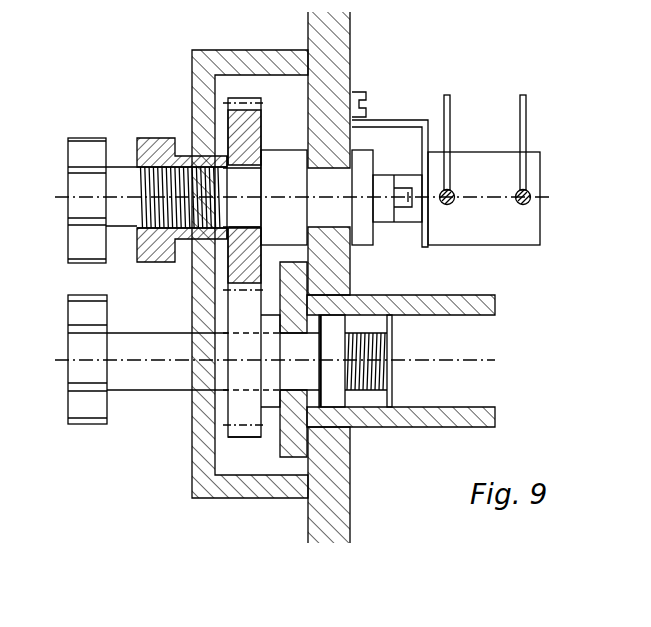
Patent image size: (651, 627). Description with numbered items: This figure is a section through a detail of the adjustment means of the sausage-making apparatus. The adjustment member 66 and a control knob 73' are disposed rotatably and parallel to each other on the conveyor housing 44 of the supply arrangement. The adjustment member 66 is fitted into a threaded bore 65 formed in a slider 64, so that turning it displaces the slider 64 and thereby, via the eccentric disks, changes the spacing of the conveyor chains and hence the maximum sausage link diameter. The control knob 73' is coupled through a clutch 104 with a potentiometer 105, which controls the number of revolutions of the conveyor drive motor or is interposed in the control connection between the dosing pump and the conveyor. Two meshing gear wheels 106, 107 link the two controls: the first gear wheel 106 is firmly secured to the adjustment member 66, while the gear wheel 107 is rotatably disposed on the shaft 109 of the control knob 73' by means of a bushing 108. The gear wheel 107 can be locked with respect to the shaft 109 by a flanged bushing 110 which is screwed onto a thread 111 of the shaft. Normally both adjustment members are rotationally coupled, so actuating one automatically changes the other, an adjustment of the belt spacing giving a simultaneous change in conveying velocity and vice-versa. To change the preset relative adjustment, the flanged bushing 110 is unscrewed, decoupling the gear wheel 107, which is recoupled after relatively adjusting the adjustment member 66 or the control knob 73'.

The conveyor housing 44 is at (313, 538).
The control knob 73' is at (75, 164).
The flanged bushing 110 is at (150, 262).
The thread 111 is at (148, 176).
The gear wheel 106 is at (242, 425).
The gear wheel 107 is at (256, 121).
The bushing 108 is at (256, 168).
The shaft 109 is at (264, 229).
The clutch 104 is at (404, 222).
The potentiometer 105 is at (497, 228).
The adjustment member 66 is at (72, 413).
The slider 64 is at (457, 395).
The threaded bore 65 is at (380, 393).